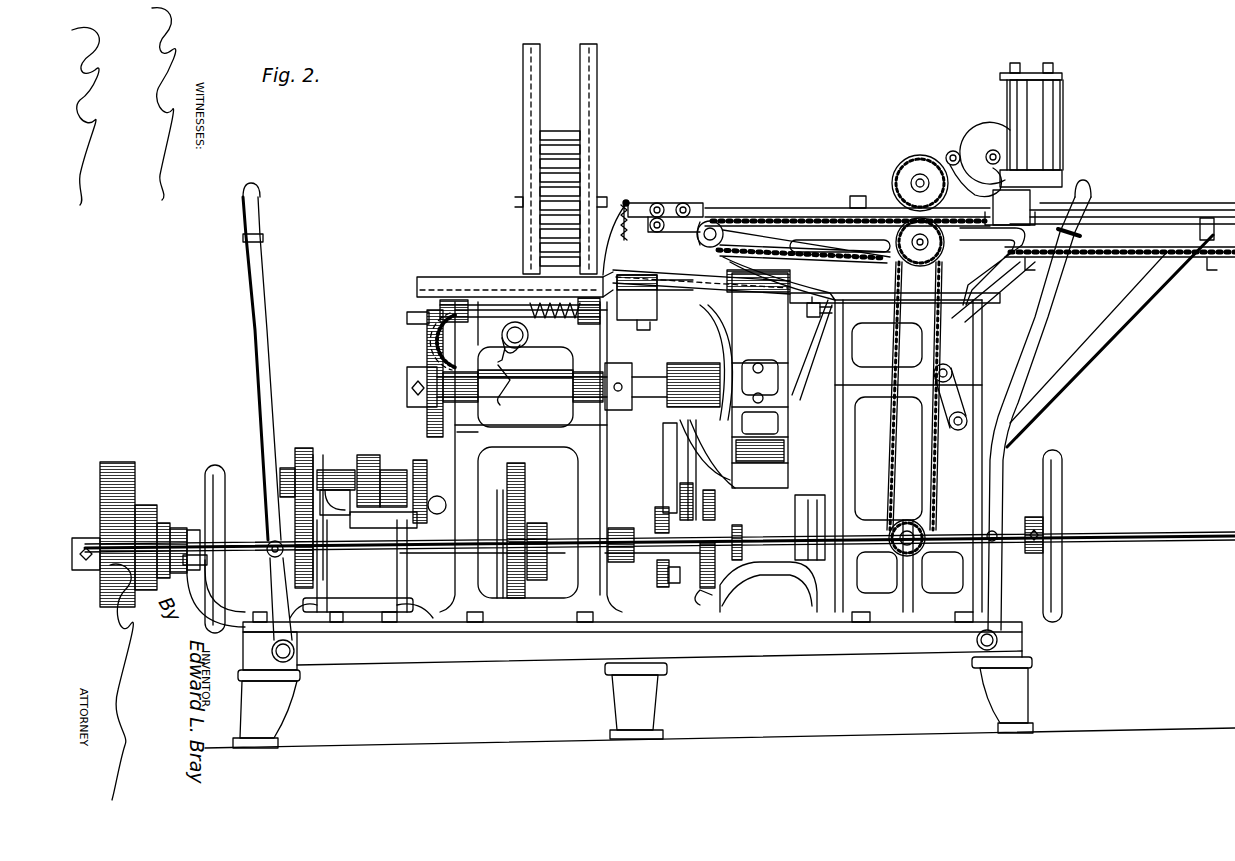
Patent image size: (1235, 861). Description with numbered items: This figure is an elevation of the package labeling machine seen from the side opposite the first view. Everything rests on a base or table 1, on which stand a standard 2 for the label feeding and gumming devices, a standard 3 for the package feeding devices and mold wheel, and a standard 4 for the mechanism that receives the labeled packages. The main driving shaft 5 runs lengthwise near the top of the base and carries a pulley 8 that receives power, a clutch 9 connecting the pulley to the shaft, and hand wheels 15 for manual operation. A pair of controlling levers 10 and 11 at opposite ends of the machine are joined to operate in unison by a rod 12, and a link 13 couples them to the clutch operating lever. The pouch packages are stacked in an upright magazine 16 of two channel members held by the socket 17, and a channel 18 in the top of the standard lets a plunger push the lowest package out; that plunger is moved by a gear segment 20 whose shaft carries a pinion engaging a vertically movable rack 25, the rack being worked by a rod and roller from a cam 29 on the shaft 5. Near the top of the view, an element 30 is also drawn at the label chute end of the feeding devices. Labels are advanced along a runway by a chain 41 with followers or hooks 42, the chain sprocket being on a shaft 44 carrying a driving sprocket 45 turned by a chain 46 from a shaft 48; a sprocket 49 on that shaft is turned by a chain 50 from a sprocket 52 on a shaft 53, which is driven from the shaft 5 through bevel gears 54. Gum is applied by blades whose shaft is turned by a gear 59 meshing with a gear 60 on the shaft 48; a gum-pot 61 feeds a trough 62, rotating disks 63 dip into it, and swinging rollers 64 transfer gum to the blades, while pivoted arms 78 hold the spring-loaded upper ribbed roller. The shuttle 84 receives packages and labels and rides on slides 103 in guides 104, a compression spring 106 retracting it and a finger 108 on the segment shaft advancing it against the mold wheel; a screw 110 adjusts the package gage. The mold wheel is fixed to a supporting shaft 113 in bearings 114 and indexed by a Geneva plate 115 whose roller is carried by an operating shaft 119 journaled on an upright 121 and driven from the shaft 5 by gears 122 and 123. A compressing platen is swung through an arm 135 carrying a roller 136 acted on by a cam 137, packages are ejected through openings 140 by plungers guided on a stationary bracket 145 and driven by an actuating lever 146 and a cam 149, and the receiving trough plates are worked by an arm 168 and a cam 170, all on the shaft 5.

The base or table 1 is at (792, 648).
The standard 2 is at (871, 323).
The standard 3 is at (538, 638).
The standard 4 is at (768, 587).
The main driving shaft 5 is at (563, 535).
The pulley 8 is at (120, 462).
The clutch 9 is at (175, 525).
The controlling lever 10 is at (1030, 322).
The controlling lever 11 is at (263, 356).
The rod 12 is at (626, 545).
The link 13 is at (240, 555).
The hand wheels 15 is at (215, 465).
The upright magazine 16 is at (585, 117).
The socket 17 is at (518, 222).
The channel 18 is at (448, 284).
The gear segment 20 is at (427, 340).
The vertically movable rack 25 is at (560, 403).
The cam 29 is at (524, 478).
The feed arm 30 is at (645, 203).
The chain 41 is at (1100, 252).
The followers or hooks 42 is at (1207, 258).
The shaft 44 is at (717, 218).
The driving sprocket 45 is at (804, 262).
The chain 46 is at (770, 217).
The shaft 48 is at (1004, 207).
The sprocket 49 is at (922, 258).
The chain 50 is at (960, 312).
The sprocket 52 is at (905, 520).
The shaft 53 is at (915, 560).
The bevel gears 54 is at (885, 555).
The gear 59 is at (917, 165).
The gear 60 is at (992, 262).
The gum-pot 61 is at (1040, 132).
The trough 62 is at (975, 173).
The rotating disks 63 is at (988, 140).
The rollers 64 is at (953, 150).
The arms 78 is at (652, 207).
The shuttle 84 is at (647, 284).
The slides 103 is at (499, 311).
The guides 104 is at (808, 300).
The compression spring 106 is at (552, 313).
The finger 108 is at (505, 350).
The screw 110 is at (813, 307).
The supporting shaft 113 is at (525, 384).
The bearings 114 is at (507, 387).
The Geneva plate 115 is at (427, 318).
The operating shaft 119 is at (348, 462).
The upright 121 is at (330, 590).
The gear 122 is at (304, 454).
The gear 123 is at (358, 596).
The arm 135 is at (672, 468).
The roller 136 is at (663, 587).
The cam 137 is at (662, 515).
The openings 140 is at (773, 343).
The stationary bracket 145 is at (670, 396).
The actuating lever 146 is at (818, 507).
The cam 149 is at (815, 563).
The arm 168 is at (698, 592).
The cam 170 is at (725, 566).